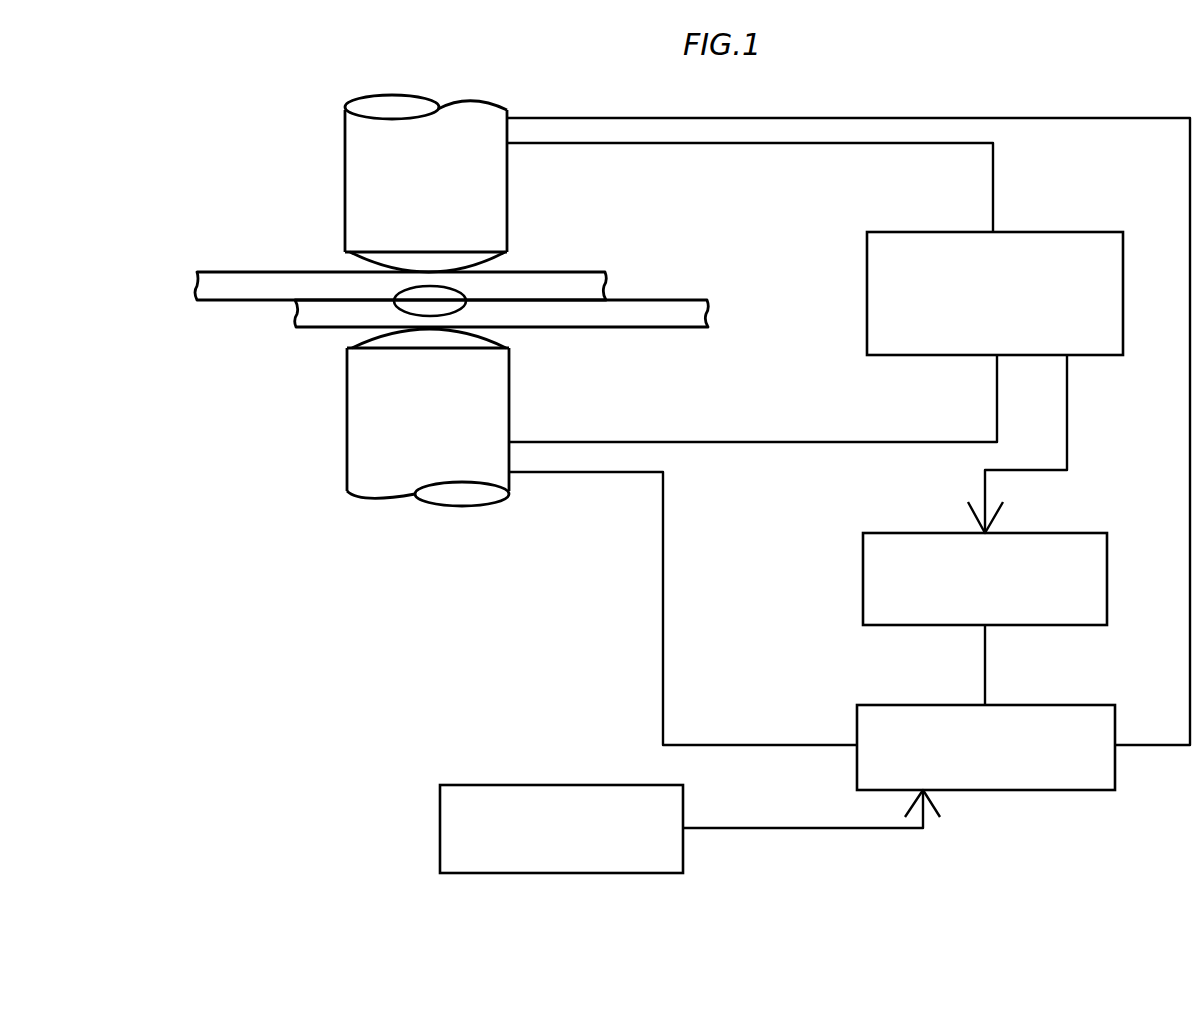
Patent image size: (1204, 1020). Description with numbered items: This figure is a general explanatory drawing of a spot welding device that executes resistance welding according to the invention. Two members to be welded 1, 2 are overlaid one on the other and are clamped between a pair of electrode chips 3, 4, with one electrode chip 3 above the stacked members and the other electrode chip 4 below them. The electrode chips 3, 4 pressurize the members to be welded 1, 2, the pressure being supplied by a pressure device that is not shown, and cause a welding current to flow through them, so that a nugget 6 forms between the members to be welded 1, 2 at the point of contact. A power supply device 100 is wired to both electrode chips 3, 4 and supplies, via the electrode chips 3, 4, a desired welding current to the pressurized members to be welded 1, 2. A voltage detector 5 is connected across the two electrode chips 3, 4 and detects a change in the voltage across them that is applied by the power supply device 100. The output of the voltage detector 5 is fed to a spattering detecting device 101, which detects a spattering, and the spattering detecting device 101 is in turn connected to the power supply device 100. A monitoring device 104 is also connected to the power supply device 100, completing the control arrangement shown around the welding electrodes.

The member to be welded 1 is at (248, 272).
The member to be welded 2 is at (313, 330).
The electrode chip 3 is at (507, 175).
The electrode chip 4 is at (510, 381).
The voltage detector 5 is at (1047, 232).
The nugget 6 is at (445, 298).
The power supply device 100 is at (1076, 705).
The spattering detecting device 101 is at (1075, 533).
The monitoring device 104 is at (481, 785).